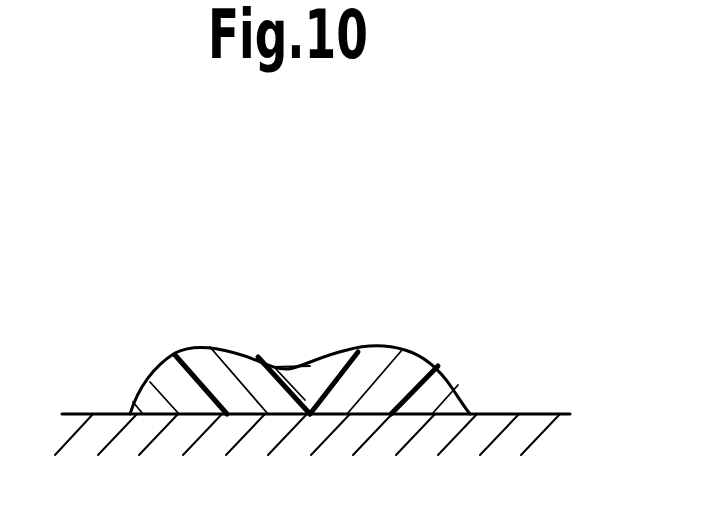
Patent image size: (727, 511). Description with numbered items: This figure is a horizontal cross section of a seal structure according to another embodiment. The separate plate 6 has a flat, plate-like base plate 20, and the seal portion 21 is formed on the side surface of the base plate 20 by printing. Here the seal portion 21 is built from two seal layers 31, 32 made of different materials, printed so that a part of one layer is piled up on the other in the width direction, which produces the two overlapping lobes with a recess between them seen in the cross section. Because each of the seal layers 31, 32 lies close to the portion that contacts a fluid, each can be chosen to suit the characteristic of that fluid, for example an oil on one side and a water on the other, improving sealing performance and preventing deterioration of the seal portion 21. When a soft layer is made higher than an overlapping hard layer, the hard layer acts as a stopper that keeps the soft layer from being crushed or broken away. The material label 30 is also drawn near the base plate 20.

The separate plate 6 is at (495, 330).
The base plate 20 is at (525, 428).
The seal portion 21 is at (313, 346).
The bump forming material 30 is at (90, 392).
The seal layer 31 is at (213, 346).
The seal layer 32 is at (401, 352).